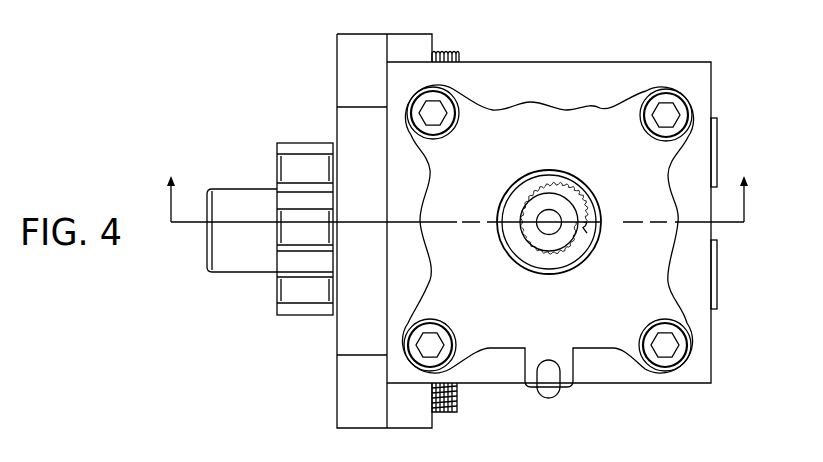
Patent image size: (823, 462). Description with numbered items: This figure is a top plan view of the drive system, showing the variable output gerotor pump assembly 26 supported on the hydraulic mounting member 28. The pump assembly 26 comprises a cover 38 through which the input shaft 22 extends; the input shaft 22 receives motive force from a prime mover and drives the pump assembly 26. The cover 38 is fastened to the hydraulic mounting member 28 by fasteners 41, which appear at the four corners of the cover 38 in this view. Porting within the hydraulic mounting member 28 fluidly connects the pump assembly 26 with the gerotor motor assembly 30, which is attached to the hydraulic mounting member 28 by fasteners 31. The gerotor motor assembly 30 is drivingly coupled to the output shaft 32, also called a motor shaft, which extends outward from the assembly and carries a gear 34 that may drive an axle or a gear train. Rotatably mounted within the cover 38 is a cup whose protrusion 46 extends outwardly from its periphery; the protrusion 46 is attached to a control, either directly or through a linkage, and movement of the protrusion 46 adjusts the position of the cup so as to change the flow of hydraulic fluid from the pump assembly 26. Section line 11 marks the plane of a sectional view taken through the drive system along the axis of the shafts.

The section line 11- 11 is at (460, 186).
The input shaft 22 is at (541, 244).
The variable output gerotor pump assembly 26 is at (552, 78).
The hydraulic mounting member 28 is at (687, 62).
The gerotor motor assembly 30 is at (306, 99).
The fasteners 31 is at (443, 52).
The output shaft 32 is at (240, 276).
The gear 34 is at (302, 319).
The cover 38 is at (562, 323).
The fasteners 41 is at (445, 119).
The protrusion 46 is at (556, 403).